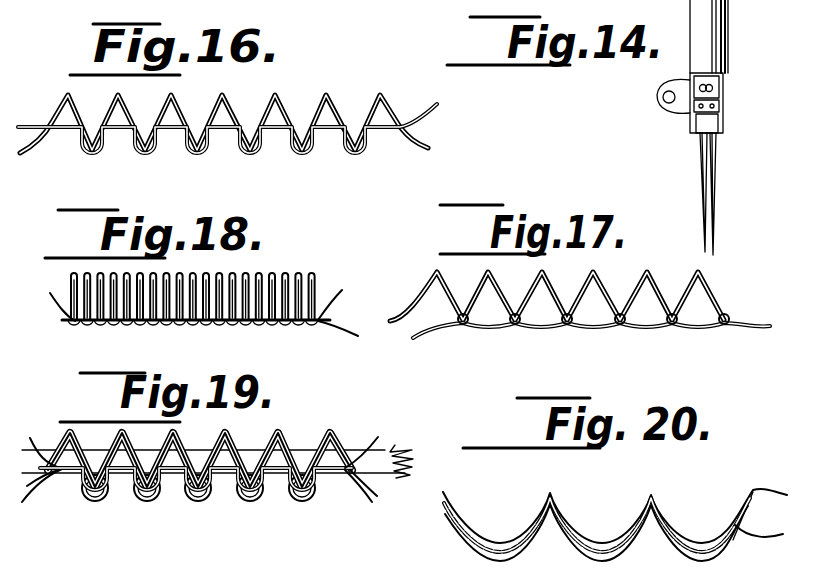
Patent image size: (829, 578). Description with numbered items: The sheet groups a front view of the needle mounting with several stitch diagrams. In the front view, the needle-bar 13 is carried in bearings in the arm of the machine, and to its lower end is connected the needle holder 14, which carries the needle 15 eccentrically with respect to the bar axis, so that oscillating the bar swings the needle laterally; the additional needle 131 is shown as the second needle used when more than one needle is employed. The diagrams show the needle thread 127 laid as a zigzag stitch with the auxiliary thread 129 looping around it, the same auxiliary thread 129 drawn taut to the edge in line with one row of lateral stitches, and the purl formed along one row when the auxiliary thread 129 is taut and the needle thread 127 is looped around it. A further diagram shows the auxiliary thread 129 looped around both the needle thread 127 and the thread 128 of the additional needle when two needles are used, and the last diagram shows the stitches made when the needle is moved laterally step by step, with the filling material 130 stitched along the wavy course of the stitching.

In FIG. 14, the needle-bar 13 is at (729, 30).
In FIG. 14, the needle holder 14 is at (724, 118).
In FIG. 14, the needle 15 is at (703, 187).
In FIG. 14, the additional needle 131 is at (716, 193).
In FIG. 16, the needle thread 127 is at (408, 145).
In FIG. 17, the needle thread 127 is at (724, 293).
In FIG. 18, the needle thread 127 is at (342, 290).
In FIG. 19, the needle thread 127 is at (356, 495).
In FIG. 20, the needle thread 127 is at (771, 488).
In FIG. 19, the thread of the additional needle 128 is at (372, 487).
In FIG. 16, the auxiliary thread 129 is at (420, 112).
In FIG. 17, the auxiliary thread 129 is at (745, 329).
In FIG. 18, the auxiliary thread 129 is at (335, 323).
In FIG. 19, the auxiliary thread 129 is at (220, 447).
In FIG. 20, the auxiliary thread 129 is at (775, 538).
In FIG. 19, the filling material 130 is at (420, 449).
In FIG. 20, the filling material 130 is at (558, 513).